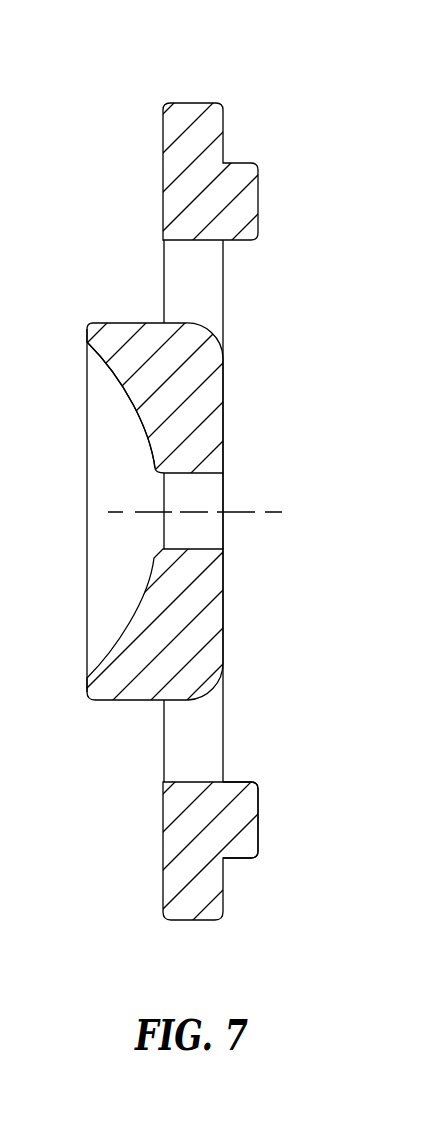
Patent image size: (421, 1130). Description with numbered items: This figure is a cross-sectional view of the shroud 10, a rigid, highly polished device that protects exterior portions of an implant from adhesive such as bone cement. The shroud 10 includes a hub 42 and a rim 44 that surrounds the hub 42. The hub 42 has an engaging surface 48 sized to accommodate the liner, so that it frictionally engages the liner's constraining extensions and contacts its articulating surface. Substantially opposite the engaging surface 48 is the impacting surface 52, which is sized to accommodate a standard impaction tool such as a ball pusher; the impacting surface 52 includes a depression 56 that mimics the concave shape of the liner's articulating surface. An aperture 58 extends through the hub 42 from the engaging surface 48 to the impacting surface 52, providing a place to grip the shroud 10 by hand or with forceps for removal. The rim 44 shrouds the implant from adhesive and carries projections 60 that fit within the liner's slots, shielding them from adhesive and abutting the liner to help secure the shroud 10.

The shroud 10 is at (196, 473).
The hub 42 is at (207, 395).
The rim 44 is at (208, 895).
The engaging surface 48 is at (227, 603).
The impacting surface 52 is at (140, 422).
The depression 56 is at (107, 587).
The aperture 58 is at (194, 498).
The projections 60 is at (243, 190).